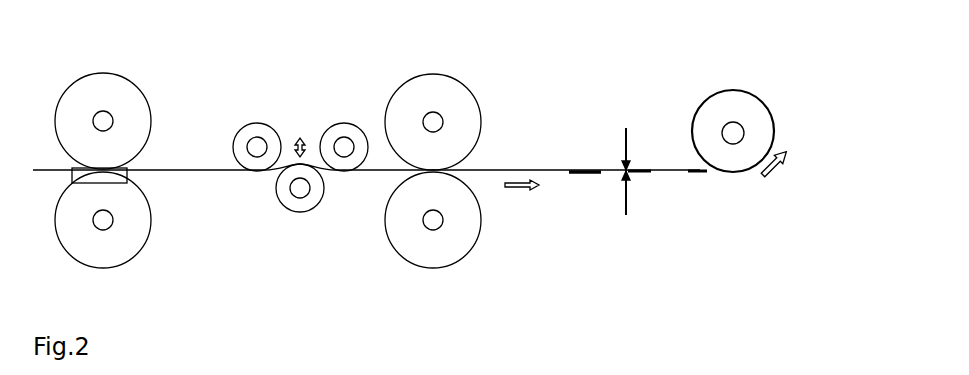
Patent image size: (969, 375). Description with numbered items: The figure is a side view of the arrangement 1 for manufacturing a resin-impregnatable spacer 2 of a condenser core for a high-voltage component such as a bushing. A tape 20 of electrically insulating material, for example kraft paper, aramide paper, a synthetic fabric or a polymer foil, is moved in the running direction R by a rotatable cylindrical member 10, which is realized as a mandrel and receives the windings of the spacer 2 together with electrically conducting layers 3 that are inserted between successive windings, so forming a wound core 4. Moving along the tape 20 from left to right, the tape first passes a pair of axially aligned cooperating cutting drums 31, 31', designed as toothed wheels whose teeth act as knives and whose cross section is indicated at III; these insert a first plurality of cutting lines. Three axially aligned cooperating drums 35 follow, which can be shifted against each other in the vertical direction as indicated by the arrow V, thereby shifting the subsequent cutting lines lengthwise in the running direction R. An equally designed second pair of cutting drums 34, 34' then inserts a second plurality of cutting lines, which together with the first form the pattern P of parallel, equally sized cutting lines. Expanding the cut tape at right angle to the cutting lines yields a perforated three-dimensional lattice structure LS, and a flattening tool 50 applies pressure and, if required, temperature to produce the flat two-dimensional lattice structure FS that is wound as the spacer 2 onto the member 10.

The arrangement 1 is at (447, 12).
The spacer 2 is at (665, 172).
The electrically conducting layers 3 is at (693, 169).
The wound core 4 is at (716, 113).
The cylindrical member 10 is at (738, 134).
The tape 20 is at (202, 171).
The cutting drum 31 is at (102, 239).
The cutting drum 31' is at (93, 117).
The cutting drum 34 is at (431, 239).
The cutting drum 34' is at (433, 105).
The drums 35 is at (300, 213).
The flattening tool 50 is at (624, 169).
The section indication III is at (125, 168).
The arrow V is at (300, 137).
The pattern P is at (522, 169).
The three-dimensional lattice structure LS is at (587, 169).
The two-dimensional lattice structure FS is at (643, 172).
The running direction R is at (527, 192).